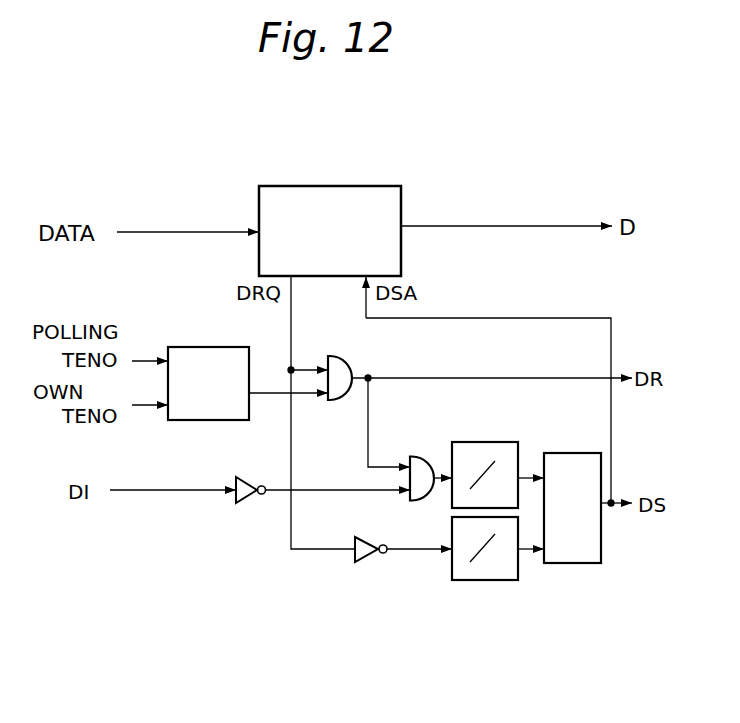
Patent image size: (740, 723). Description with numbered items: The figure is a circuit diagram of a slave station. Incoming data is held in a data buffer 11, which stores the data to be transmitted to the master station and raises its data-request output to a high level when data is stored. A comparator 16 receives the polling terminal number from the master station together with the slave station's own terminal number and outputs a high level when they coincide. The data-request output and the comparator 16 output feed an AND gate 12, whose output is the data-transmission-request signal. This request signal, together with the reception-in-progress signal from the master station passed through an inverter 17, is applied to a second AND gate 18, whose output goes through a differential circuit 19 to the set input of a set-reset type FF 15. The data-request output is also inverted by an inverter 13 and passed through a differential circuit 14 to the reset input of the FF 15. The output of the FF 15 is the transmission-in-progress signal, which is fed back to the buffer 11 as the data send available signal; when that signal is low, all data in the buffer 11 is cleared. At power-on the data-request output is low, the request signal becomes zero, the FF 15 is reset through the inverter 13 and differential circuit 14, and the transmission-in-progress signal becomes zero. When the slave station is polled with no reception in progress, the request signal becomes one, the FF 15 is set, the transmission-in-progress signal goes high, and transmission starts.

The data buffer 11 is at (347, 185).
The AND gate 12 is at (345, 356).
The inverter 13 is at (367, 563).
The differential circuit 14 is at (485, 581).
The set-reset type FF 15 is at (572, 564).
The comparator 16 is at (208, 347).
The inverter 17 is at (243, 504).
The AND gate 18 is at (420, 456).
The differential circuit 19 is at (487, 441).